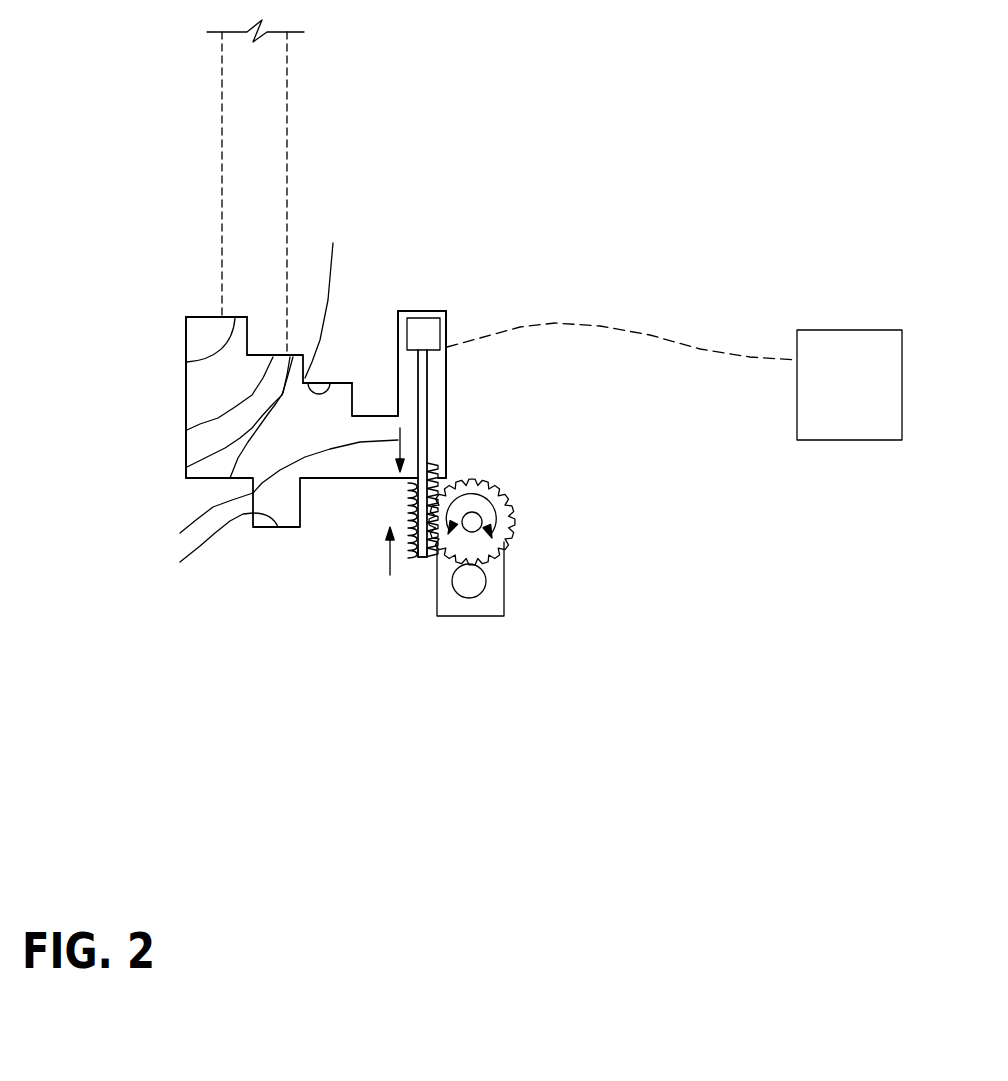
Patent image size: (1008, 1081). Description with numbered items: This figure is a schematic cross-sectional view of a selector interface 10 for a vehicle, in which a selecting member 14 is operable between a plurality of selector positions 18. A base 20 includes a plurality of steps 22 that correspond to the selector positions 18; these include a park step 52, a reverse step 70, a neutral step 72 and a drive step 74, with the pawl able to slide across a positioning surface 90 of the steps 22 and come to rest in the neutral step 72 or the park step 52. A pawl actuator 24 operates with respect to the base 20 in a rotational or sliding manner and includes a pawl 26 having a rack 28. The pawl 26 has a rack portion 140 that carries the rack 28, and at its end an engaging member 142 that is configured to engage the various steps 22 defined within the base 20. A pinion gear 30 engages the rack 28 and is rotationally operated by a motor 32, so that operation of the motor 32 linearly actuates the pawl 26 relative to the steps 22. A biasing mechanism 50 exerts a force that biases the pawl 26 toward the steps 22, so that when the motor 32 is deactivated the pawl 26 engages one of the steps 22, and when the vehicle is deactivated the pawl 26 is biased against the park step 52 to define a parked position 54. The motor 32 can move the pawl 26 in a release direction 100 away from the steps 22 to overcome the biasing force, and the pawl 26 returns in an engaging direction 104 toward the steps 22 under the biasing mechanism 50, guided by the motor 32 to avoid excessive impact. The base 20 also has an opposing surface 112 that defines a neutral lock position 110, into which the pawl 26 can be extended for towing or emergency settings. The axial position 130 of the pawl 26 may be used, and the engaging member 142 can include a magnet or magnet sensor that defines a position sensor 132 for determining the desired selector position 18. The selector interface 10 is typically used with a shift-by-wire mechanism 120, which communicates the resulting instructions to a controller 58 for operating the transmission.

The selector interface 10 is at (352, 118).
The selecting member 14 is at (222, 80).
The selector positions 18 is at (190, 272).
The base 20 is at (180, 404).
The steps 22 is at (193, 328).
The pawl actuator 24 is at (531, 528).
The pawl 26 is at (512, 453).
The rack 28 is at (452, 469).
The pinion gear 30 is at (507, 498).
The motor 32 is at (417, 607).
The biasing mechanism 50 is at (308, 535).
The park step 52 is at (467, 336).
The parked position 54 is at (462, 298).
The controller 58 is at (847, 330).
The reverse step 70 is at (347, 307).
The neutral step 72 is at (187, 430).
The drive step 74 is at (187, 362).
The positioning surface 90 is at (187, 467).
The release direction 100 is at (180, 533).
The engaging direction 104 is at (310, 573).
The neutral lock position 110 is at (214, 472).
The opposing surface 112 is at (325, 231).
The shift-by-wire mechanism 120 is at (849, 455).
The axial position 130 is at (527, 452).
The position sensor 132 is at (409, 298).
The rack portion 140 is at (344, 599).
The engaging member 142 is at (518, 310).